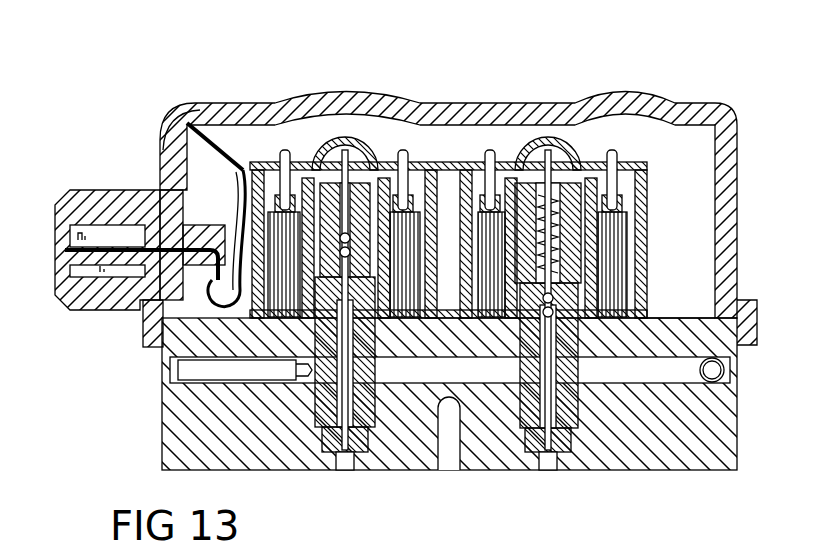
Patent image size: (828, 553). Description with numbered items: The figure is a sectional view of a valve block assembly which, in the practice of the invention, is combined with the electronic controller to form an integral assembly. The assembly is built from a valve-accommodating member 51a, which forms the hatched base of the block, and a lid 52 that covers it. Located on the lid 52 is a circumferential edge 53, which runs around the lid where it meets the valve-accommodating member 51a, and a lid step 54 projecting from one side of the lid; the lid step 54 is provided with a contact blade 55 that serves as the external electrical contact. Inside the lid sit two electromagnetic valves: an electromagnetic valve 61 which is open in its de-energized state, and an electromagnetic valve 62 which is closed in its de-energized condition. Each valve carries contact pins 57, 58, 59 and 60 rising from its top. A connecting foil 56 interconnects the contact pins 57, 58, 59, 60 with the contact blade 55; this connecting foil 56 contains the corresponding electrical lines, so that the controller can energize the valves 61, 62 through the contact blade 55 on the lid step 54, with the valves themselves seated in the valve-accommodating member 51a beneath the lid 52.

The valve-accommodating member 51a is at (690, 450).
The lid 52 is at (692, 105).
The circumferential edge 53 is at (150, 333).
The lid step 54 is at (65, 300).
The contact blade 55 is at (85, 250).
The connecting foil 56 is at (238, 168).
The contact pin 57 is at (612, 150).
The contact pin 58 is at (490, 150).
The contact pin 59 is at (403, 150).
The contact pin 60 is at (287, 150).
The electromagnetic valve 61 is at (166, 122).
The electromagnetic valve 62 is at (585, 160).